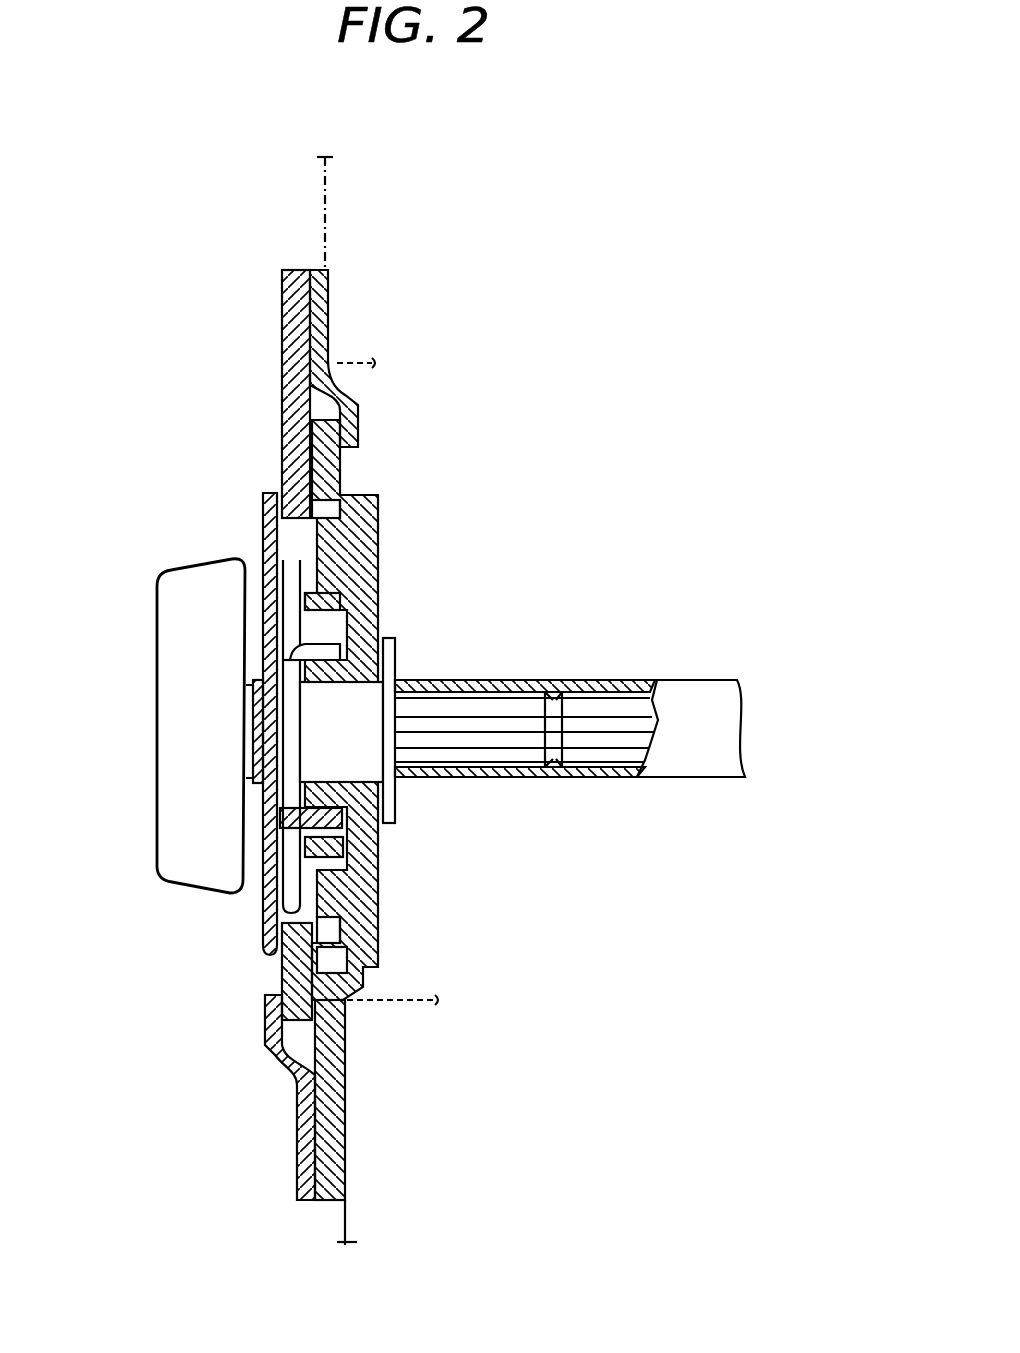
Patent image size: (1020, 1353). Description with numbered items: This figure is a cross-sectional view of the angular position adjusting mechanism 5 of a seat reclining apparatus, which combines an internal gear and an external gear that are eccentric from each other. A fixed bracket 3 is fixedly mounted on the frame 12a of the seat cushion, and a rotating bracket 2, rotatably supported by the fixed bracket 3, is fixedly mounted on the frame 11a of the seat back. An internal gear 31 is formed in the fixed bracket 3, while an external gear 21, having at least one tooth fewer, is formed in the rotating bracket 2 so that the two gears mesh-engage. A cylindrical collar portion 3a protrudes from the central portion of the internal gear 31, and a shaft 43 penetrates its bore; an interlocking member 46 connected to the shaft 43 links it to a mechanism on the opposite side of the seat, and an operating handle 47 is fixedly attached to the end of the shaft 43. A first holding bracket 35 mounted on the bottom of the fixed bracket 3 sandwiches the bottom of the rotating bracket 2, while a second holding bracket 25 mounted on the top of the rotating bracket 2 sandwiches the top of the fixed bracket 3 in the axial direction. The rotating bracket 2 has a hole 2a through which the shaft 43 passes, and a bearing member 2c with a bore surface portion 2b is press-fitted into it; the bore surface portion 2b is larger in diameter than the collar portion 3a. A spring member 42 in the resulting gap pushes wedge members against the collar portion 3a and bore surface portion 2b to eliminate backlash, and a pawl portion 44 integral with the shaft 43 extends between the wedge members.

The rotating bracket 2 is at (282, 423).
The hole 2a is at (335, 590).
The bore surface portion 2b is at (340, 625).
The bearing member 2c is at (270, 562).
The fixed bracket 3 is at (347, 993).
The collar portion 3a is at (345, 655).
The angular position adjusting mechanism 5 is at (225, 349).
The frame of the seat back 11a is at (323, 207).
The frame of the seat cushion 12a is at (340, 1222).
The external gear 21 is at (337, 932).
The second holding bracket 25 is at (322, 313).
The internal gear 31 is at (337, 960).
The first holding bracket 35 is at (267, 1052).
The spring member 42 is at (284, 888).
The shaft 43 is at (350, 702).
The pawl portion 44 is at (388, 822).
The interlocking member 46 is at (633, 682).
The operating handle 47 is at (165, 773).